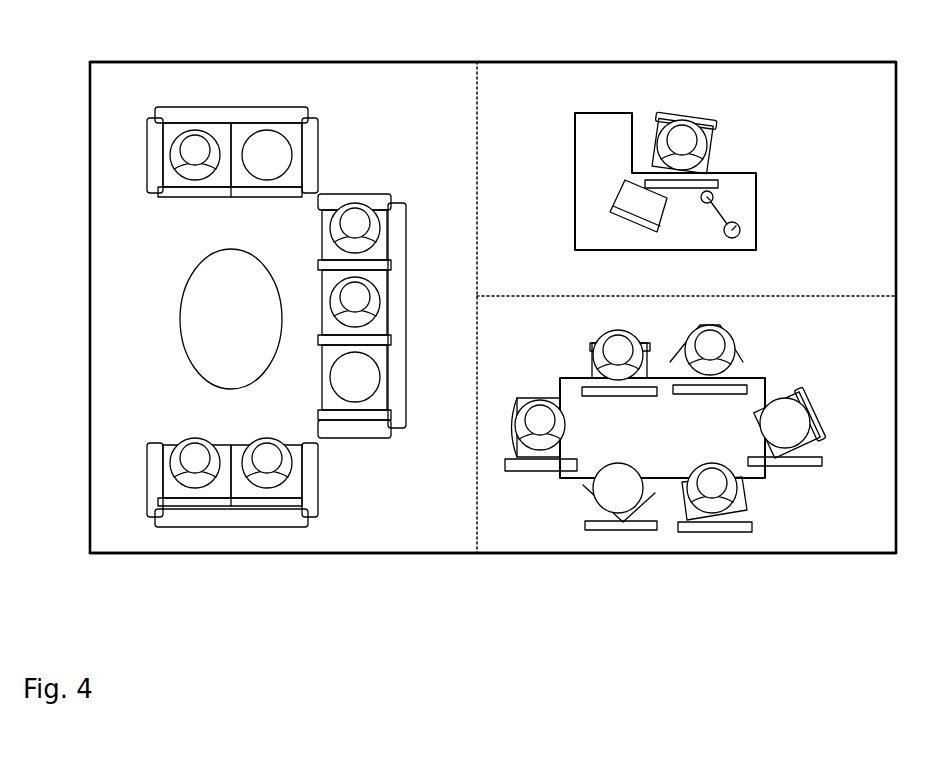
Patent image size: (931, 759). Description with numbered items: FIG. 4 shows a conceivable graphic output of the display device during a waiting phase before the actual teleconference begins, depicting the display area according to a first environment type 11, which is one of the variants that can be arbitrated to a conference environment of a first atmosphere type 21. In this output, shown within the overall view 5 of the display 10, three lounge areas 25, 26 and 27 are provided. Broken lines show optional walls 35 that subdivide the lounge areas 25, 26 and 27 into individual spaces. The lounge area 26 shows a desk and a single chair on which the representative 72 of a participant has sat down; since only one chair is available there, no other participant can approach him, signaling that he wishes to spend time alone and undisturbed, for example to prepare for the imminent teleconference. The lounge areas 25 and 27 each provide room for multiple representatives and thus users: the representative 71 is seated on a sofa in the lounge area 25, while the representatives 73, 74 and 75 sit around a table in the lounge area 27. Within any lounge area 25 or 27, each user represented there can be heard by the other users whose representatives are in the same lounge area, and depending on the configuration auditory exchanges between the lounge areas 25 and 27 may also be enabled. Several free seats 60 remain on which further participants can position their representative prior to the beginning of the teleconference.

The system 5 is at (90, 62).
The building 10 is at (842, 62).
The environment type 11 is at (162, 58).
The atmosphere type 21 is at (108, 570).
The lounge area 25 is at (368, 103).
The lounge area 26 is at (722, 102).
The lounge area 27 is at (817, 528).
The optional walls 35 is at (478, 97).
The free seat 60 is at (273, 145).
The representative 71 is at (195, 143).
The representative 72 is at (683, 143).
The representative 73 is at (712, 348).
The representative 74 is at (610, 345).
The representative 75 is at (540, 413).